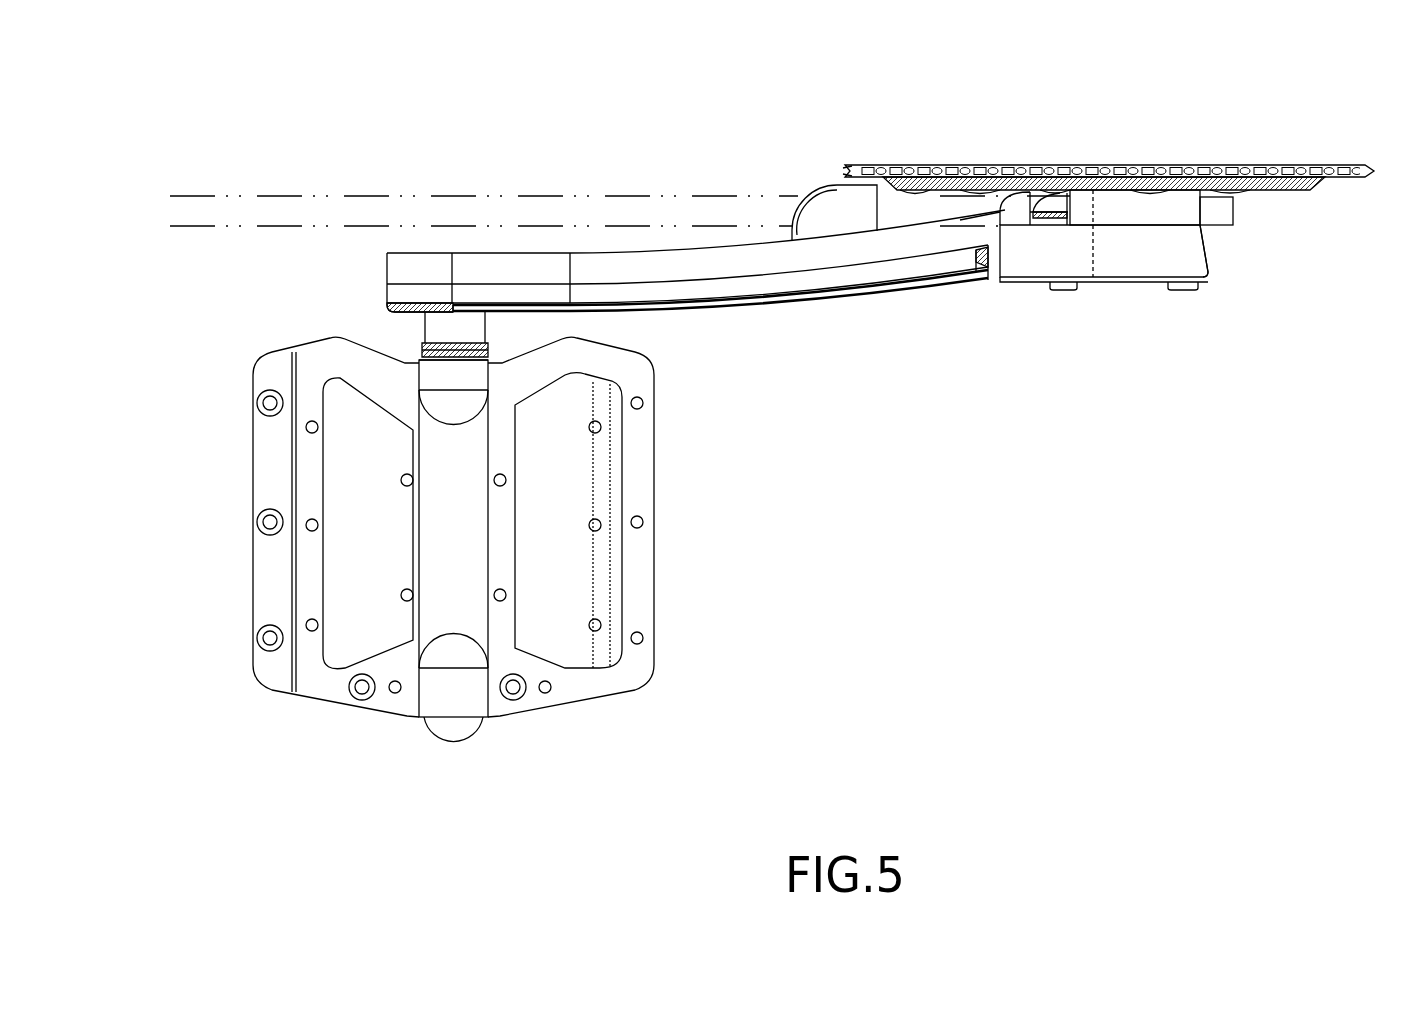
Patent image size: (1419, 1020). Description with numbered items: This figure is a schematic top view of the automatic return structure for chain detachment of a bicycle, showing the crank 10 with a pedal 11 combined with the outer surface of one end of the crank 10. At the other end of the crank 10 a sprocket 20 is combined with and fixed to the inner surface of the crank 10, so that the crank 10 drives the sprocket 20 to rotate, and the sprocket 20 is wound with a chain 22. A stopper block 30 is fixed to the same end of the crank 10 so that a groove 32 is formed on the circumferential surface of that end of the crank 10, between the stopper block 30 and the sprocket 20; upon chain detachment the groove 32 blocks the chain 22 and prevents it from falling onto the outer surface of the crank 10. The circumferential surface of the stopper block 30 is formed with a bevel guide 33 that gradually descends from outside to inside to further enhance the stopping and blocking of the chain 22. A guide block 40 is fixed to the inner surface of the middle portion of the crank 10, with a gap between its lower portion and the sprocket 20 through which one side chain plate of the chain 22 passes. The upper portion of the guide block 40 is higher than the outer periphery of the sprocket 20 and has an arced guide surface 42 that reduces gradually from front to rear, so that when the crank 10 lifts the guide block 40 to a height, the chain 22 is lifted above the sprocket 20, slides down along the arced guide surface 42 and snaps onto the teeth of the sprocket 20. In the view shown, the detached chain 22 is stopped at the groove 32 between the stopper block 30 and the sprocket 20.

The crank 10 is at (783, 268).
The pedal 11 is at (268, 562).
The sprocket 20 is at (1132, 170).
The chain 22 is at (410, 200).
The stopper block 30 is at (1035, 280).
The groove 32 is at (1200, 208).
The bevel guide 33 is at (1210, 253).
The guide block 40 is at (838, 227).
The arced guide surface 42 is at (808, 198).